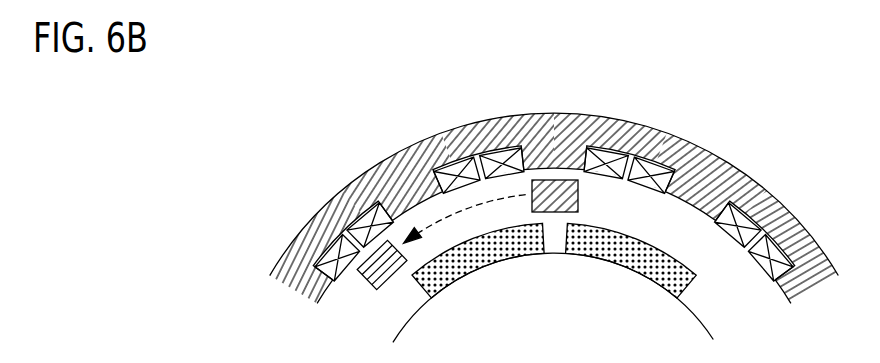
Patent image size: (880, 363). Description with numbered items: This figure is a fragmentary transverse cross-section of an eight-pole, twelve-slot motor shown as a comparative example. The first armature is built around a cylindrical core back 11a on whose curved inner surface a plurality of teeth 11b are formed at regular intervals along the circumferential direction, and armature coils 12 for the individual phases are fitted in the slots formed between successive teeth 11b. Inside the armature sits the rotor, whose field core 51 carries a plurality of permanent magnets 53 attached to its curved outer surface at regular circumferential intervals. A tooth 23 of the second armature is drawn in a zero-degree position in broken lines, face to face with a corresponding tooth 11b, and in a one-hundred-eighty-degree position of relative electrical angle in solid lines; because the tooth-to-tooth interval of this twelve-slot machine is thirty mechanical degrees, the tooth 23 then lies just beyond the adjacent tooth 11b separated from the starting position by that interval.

The core back 11a is at (720, 167).
The teeth 11b is at (413, 195).
The armature coils 12 is at (750, 213).
The teeth 23 is at (370, 175).
The field core 51 is at (705, 332).
The permanent magnets 53 is at (475, 275).